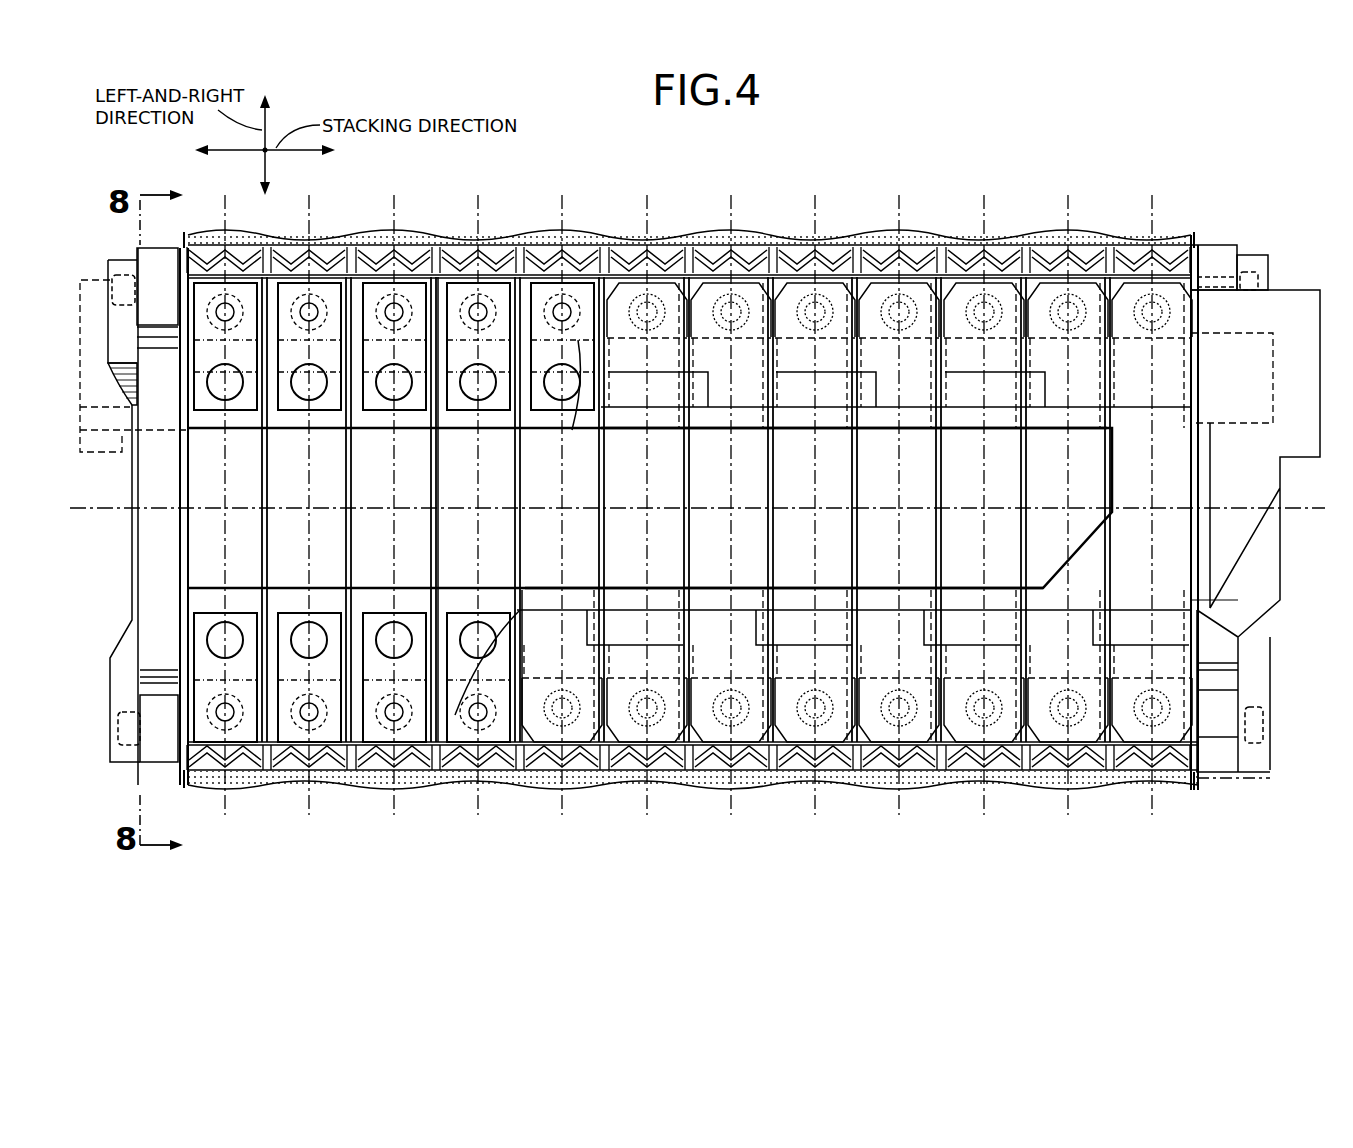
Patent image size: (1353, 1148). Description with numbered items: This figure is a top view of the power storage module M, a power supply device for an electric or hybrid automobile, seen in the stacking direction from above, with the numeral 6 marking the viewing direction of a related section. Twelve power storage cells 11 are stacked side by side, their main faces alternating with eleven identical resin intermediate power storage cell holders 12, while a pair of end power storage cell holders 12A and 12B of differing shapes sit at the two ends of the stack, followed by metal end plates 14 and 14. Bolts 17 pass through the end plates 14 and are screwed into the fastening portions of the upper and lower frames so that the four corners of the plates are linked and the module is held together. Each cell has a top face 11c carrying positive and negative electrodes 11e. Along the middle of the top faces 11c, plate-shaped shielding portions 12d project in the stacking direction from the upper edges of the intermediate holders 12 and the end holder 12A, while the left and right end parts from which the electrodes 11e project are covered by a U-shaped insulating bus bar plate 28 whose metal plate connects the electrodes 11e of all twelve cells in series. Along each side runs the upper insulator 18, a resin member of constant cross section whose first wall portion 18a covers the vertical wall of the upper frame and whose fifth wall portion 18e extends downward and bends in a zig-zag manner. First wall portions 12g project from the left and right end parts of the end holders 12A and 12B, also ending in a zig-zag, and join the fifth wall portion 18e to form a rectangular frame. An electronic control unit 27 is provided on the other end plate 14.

The power storage module M is at (778, 188).
The battery pack 6 is at (375, 840).
The power storage cell 11 is at (236, 430).
The top face 11c is at (215, 422).
The electrode 11e is at (232, 305).
The intermediate power storage cell holder 12 is at (340, 522).
The end power storage cell holder 12A is at (126, 530).
The end power storage cell holder 12B is at (1250, 650).
The shielding portion 12d is at (250, 538).
The first wall portion 12g is at (187, 232).
The end plate 14 is at (116, 350).
The bolt 17 is at (112, 285).
The upper insulator 18 is at (698, 222).
The first wall portion 18a is at (960, 245).
The fifth wall portion 18e is at (1030, 243).
The electronic control unit 27 is at (1300, 462).
The bus bar plate 28 is at (745, 578).